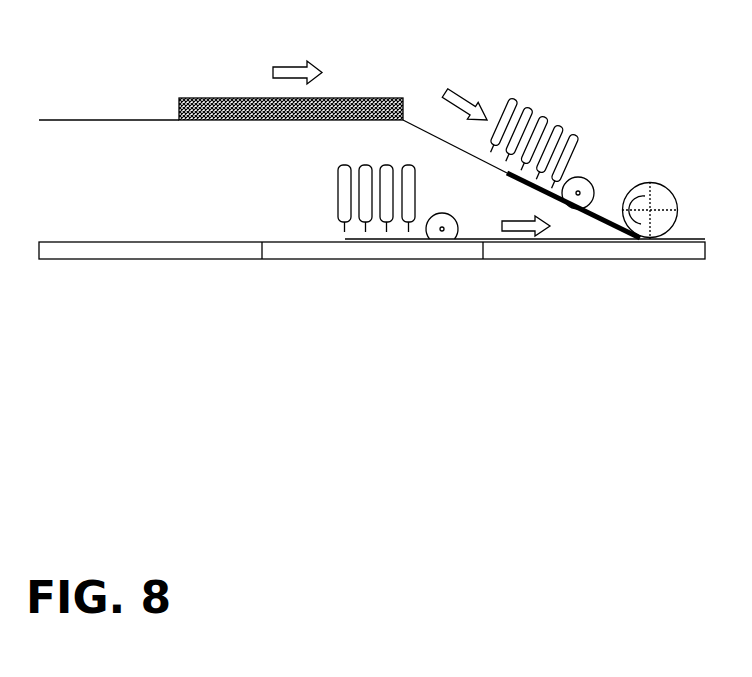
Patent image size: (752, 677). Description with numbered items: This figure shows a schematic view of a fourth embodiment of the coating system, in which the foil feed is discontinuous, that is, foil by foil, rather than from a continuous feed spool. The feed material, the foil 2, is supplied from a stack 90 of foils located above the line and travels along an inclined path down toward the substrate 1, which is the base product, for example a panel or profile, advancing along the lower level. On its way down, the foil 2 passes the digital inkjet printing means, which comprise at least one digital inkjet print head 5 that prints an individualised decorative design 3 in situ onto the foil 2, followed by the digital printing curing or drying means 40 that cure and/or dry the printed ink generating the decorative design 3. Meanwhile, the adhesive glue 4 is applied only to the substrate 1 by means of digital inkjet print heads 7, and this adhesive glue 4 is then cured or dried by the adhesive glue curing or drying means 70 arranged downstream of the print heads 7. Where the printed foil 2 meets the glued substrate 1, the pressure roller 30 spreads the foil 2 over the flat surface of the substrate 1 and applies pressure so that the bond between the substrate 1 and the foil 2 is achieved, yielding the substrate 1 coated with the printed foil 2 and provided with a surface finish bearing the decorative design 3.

The substrate 1 is at (548, 253).
The foil 2 is at (514, 177).
The decorative design 3 is at (695, 236).
The adhesive glue 4 is at (483, 240).
The digital inkjet print head 5 is at (553, 122).
The digital inkjet print heads for adhesive glue 7 is at (345, 182).
The pressure roller 30 is at (660, 202).
The digital printing curing or drying means 40 is at (587, 182).
The adhesive glue curing or drying means 70 is at (444, 212).
The stack of foils 90 is at (340, 108).